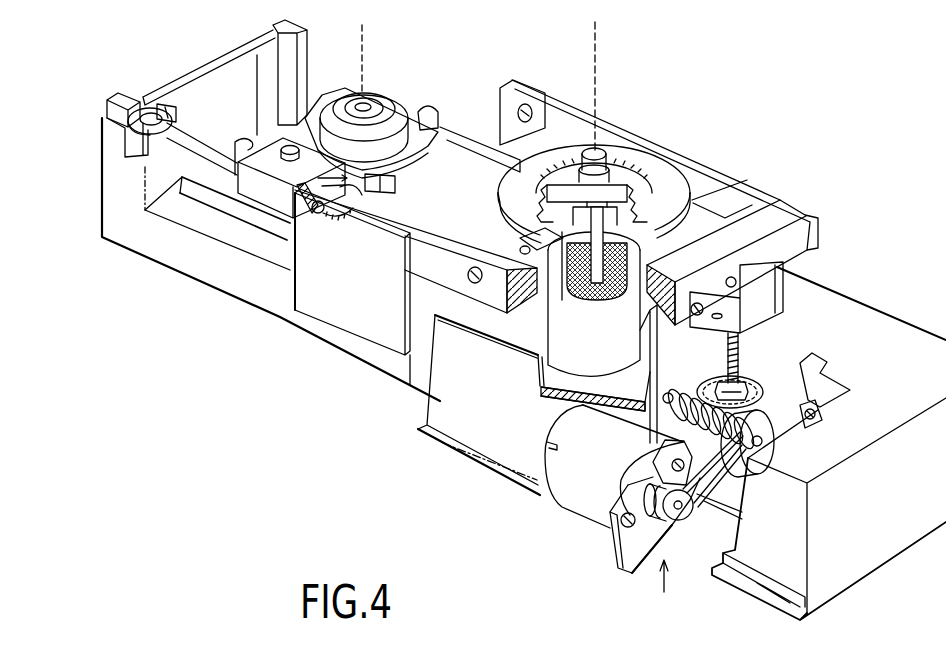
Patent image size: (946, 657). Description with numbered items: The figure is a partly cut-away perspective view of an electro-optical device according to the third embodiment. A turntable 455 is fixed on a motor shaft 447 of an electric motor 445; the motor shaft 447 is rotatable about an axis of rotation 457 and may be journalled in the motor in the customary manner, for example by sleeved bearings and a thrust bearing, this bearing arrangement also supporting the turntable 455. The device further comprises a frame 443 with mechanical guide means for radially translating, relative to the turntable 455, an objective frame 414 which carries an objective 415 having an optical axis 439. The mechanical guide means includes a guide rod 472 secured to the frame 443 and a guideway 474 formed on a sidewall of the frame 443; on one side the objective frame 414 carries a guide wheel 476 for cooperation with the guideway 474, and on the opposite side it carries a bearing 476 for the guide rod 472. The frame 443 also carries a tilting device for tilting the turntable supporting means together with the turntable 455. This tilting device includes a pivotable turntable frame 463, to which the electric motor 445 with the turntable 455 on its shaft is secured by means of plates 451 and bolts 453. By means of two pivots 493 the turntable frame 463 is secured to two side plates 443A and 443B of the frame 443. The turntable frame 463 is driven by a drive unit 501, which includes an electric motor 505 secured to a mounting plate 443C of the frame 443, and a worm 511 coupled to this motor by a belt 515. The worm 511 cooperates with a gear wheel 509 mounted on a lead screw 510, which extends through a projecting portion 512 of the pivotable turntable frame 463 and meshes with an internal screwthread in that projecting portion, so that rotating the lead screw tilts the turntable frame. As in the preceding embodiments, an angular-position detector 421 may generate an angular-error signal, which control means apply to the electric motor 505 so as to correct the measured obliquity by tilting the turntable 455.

The frame 443 is at (865, 568).
The side plate 443A is at (330, 296).
The side plate 443B is at (510, 143).
The mounting plate 443C is at (632, 547).
The guide rod 472 is at (190, 135).
The guide wheel 476 is at (430, 110).
The angular-position detector 421 is at (283, 165).
The objective frame 414 is at (408, 112).
The objective 415 is at (362, 100).
The optical axis 439 is at (364, 18).
The guideway 474 is at (445, 147).
The pivot 493 is at (527, 108).
The turntable frame 463 is at (770, 215).
The axis of rotation 457 is at (630, 28).
The turntable 455 is at (668, 178).
The motor shaft 447 is at (602, 197).
The bolt 453 is at (483, 233).
The electric motor 445 is at (567, 343).
The plate 451 is at (543, 243).
The projecting portion 512 is at (760, 290).
The lead screw 510 is at (742, 348).
The gear wheel 509 is at (750, 390).
The worm 511 is at (655, 432).
The electric motor 505 is at (582, 493).
The belt 515 is at (700, 497).
The drive unit 501 is at (673, 588).